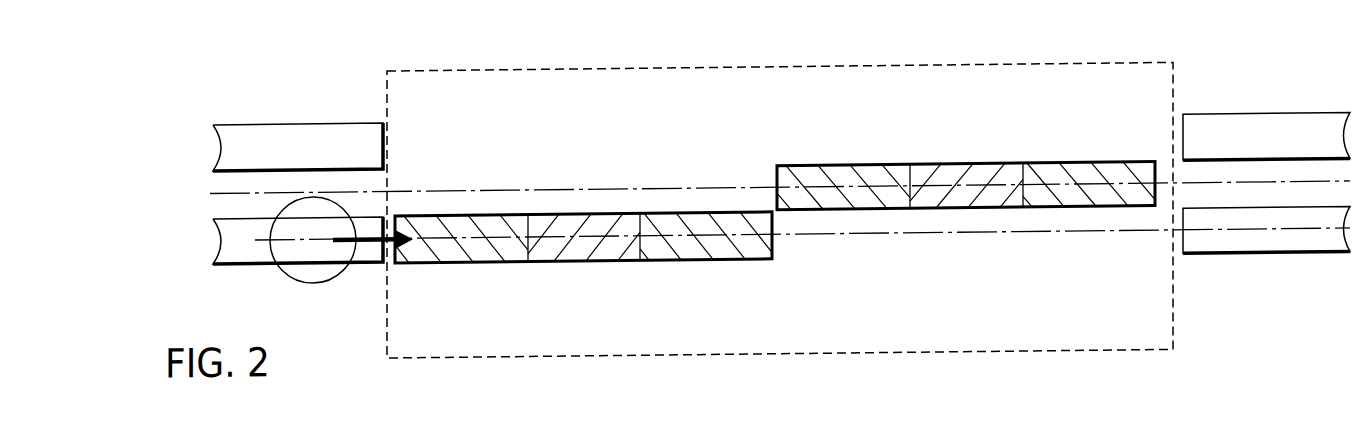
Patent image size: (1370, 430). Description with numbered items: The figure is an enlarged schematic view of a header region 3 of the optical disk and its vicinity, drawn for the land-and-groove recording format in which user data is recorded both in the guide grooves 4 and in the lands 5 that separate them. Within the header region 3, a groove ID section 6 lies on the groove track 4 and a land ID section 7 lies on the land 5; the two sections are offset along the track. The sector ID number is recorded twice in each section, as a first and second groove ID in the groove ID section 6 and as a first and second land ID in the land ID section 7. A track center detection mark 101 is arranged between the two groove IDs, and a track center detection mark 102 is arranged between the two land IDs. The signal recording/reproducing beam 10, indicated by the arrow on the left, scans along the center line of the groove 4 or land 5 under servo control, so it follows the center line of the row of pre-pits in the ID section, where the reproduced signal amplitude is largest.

The header region 3 is at (716, 71).
The guide groove 4 is at (729, 188).
The land 5 is at (735, 188).
The groove ID section 6 is at (583, 244).
The land ID section 7 is at (966, 184).
The signal recording/reproducing beam 10 is at (313, 282).
The track center detection mark 101 is at (578, 216).
The track center detection mark 102 is at (957, 215).